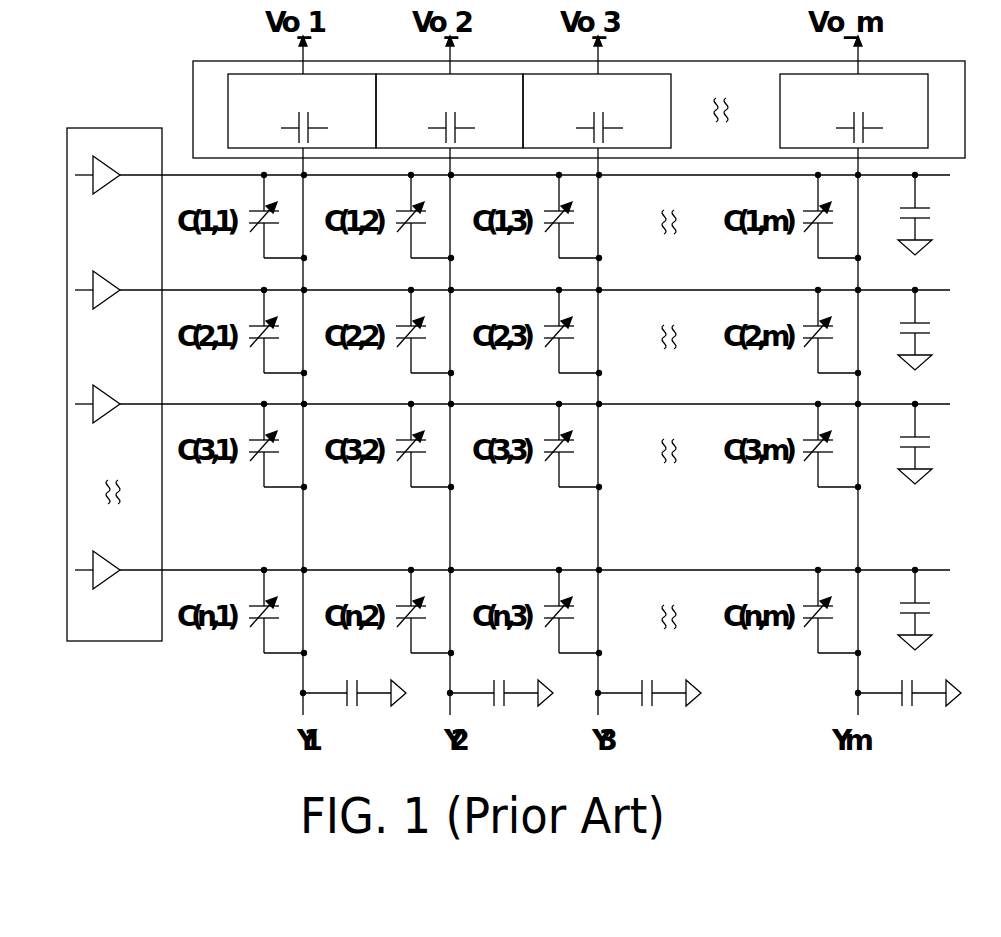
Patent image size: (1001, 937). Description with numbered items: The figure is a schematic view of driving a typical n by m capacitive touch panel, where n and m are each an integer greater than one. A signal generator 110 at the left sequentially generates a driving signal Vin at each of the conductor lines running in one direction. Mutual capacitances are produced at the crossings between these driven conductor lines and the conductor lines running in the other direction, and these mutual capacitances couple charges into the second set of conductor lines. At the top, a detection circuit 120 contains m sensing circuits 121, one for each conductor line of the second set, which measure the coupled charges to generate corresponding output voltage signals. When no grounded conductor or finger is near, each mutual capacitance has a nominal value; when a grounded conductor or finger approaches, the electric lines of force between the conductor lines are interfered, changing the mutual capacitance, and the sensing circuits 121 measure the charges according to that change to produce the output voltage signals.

The signal generator 110 is at (112, 128).
The detection circuit 120 is at (193, 100).
The sensing circuit 121 is at (253, 73).